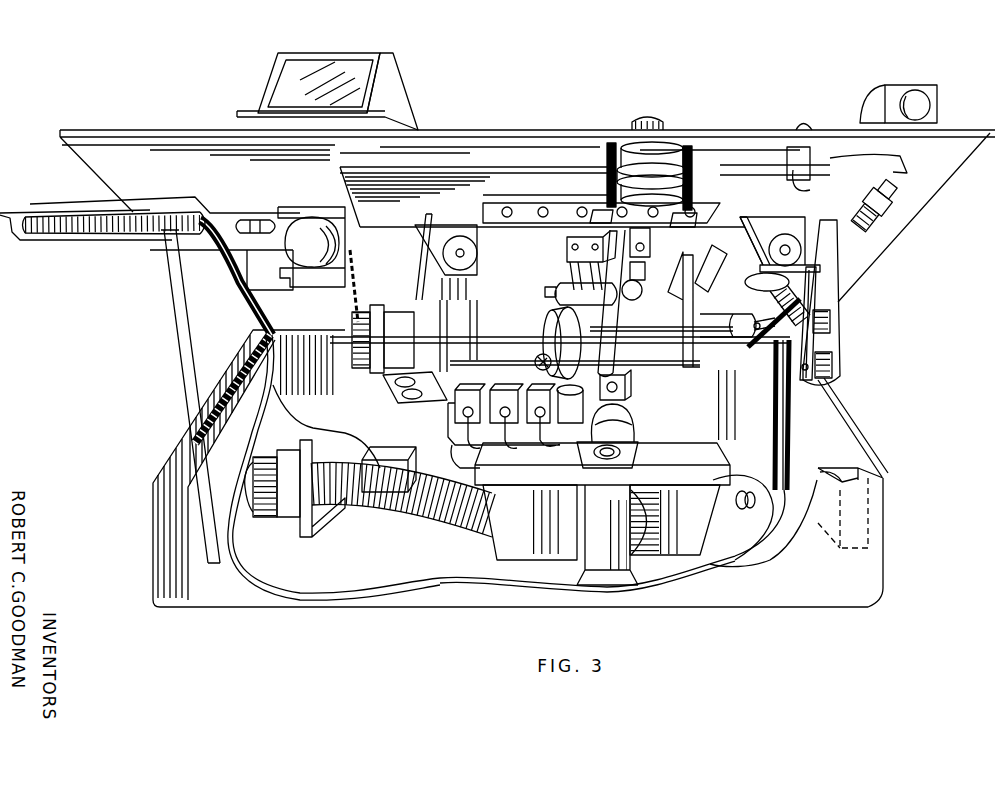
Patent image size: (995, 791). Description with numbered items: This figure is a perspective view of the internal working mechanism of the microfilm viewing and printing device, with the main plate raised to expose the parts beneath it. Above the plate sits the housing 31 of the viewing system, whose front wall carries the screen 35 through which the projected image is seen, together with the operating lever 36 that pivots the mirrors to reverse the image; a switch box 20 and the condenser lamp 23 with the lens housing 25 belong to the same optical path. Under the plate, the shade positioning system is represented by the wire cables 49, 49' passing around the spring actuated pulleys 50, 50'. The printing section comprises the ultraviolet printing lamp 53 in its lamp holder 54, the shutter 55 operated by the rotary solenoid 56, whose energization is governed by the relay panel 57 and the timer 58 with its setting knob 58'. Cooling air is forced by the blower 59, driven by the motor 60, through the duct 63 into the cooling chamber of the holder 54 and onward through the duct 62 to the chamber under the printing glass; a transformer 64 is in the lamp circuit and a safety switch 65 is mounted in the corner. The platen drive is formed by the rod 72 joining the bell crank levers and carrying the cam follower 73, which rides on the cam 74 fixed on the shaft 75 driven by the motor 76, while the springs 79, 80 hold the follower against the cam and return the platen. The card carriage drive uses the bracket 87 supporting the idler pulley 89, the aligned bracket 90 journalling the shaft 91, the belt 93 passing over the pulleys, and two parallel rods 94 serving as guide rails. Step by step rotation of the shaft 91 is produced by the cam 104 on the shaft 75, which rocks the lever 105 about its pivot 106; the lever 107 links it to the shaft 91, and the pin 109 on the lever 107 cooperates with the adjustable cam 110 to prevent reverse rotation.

The switch box 20 is at (930, 103).
The condenser lamp 23 is at (310, 282).
The housing 25 is at (280, 215).
The housing 31 is at (398, 90).
The screen 35 is at (290, 70).
The operating lever 36 is at (806, 125).
The wire cable 49 is at (402, 257).
The spring actuated pulley 50 is at (424, 298).
The wire cable 49' is at (753, 224).
The spring actuated pulley 50' is at (780, 232).
The ultraviolet printing lamp 53 is at (470, 468).
The lamp holder 54 is at (586, 540).
The shutter 55 is at (696, 488).
The rotary solenoid 56 is at (744, 508).
The relay panel 57 is at (630, 396).
The timer 58 is at (748, 188).
The knob 58' is at (625, 114).
The blower 59 is at (292, 522).
The motor 60 is at (268, 522).
The duct 62 is at (656, 535).
The duct 63 is at (382, 519).
The transformer 64 is at (412, 444).
The safety switch 65 is at (858, 470).
The rod 72 is at (610, 355).
The cam follower 73 is at (536, 358).
The cam 74 is at (560, 328).
The shaft 75 is at (527, 335).
The motor 76 is at (380, 378).
The spring 79 is at (722, 264).
The spring 80 is at (748, 287).
The bracket 87 is at (650, 240).
The idler pulley 89 is at (575, 250).
The bracket 90 is at (638, 298).
The shaft 91 is at (728, 325).
The belt 93 is at (635, 278).
The parallel rods 94 is at (575, 290).
The cam 104 is at (776, 365).
The lever 105 is at (832, 352).
The pivot 106 is at (832, 370).
The lever 107 is at (772, 342).
The pin 109 is at (812, 304).
The cam 110 is at (745, 313).